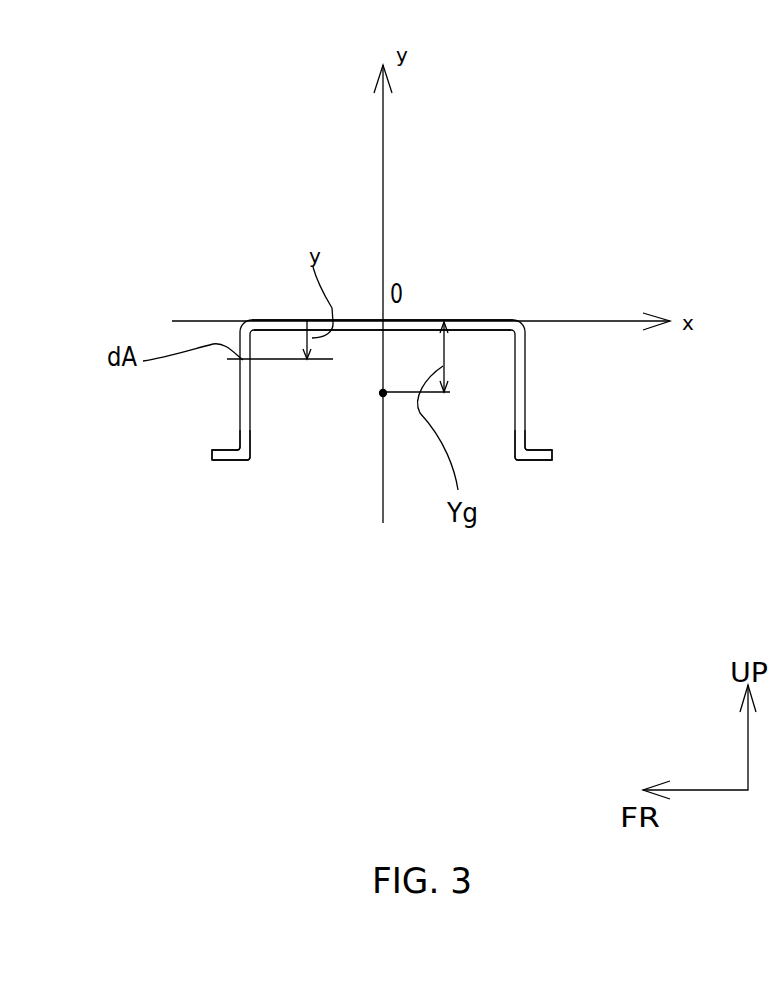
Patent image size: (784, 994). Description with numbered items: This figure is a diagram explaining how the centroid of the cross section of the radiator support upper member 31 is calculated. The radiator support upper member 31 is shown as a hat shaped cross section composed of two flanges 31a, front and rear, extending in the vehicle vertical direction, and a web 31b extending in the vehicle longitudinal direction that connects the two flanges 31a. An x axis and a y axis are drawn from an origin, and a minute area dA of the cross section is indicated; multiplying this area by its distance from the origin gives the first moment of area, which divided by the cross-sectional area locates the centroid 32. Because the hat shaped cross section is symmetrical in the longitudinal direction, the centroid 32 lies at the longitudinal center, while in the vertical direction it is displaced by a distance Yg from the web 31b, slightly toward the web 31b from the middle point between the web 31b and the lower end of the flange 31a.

The radiator support upper member 31 is at (527, 393).
The flange 31a is at (239, 406).
The web 31b is at (482, 318).
The centroid 32 is at (380, 393).